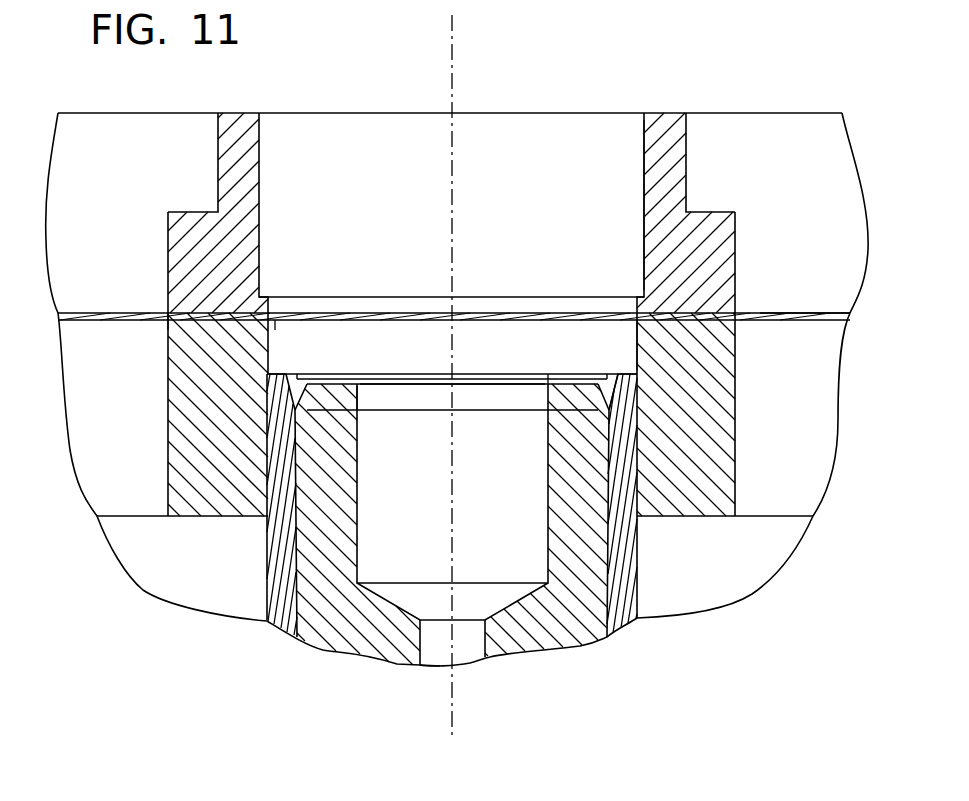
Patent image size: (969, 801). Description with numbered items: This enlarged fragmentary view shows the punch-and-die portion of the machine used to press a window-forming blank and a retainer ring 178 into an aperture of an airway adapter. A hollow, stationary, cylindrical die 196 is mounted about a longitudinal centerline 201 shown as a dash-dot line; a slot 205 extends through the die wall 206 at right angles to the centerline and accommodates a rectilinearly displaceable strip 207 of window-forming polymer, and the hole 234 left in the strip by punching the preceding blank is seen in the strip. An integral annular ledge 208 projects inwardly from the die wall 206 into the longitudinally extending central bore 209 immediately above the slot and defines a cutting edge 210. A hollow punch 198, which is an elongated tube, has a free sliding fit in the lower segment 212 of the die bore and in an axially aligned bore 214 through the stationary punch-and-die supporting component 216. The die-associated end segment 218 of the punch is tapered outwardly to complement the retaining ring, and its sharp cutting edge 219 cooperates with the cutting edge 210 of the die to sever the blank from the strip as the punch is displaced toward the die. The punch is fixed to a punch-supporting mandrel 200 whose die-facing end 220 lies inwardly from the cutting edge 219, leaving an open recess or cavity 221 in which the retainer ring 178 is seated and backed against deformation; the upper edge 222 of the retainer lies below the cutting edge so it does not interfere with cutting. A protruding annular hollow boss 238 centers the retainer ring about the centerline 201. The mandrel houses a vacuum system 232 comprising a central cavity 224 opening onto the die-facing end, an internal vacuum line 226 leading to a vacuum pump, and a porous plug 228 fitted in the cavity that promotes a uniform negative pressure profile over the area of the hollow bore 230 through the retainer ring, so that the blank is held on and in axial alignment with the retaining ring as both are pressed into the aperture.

The retainer ring 178 is at (613, 398).
The die 196 is at (168, 238).
The hollow punch 198 is at (637, 583).
The punch-supporting mandrel 200 is at (580, 645).
The longitudinal centerline 201 is at (450, 138).
The slot 205 is at (185, 318).
The die wall 206 is at (735, 240).
The strip of window-forming polymer 207 is at (415, 313).
The annular ledge 208 is at (620, 313).
The central bore 209 is at (644, 153).
The cutting edge 210 is at (287, 320).
The lower segment of die bore 212 is at (627, 333).
The bore 214 is at (270, 557).
The punch-and-die supporting component 216 is at (740, 600).
The die-associated end segment of punch 218 is at (270, 384).
The cutting edge of punch 219 is at (270, 362).
The die-facing end of mandrel 220 is at (507, 400).
The recess or cavity 221 is at (614, 372).
The upper edge of retainer 222 is at (393, 374).
The central vacuum cavity 224 is at (548, 478).
The internal vacuum line 226 is at (486, 640).
The porous plug 228 is at (520, 568).
The hollow bore of retainer ring 230 is at (357, 398).
The vacuum system 232 is at (397, 672).
The hole 234 is at (770, 313).
The annular hollow boss 238 is at (552, 350).